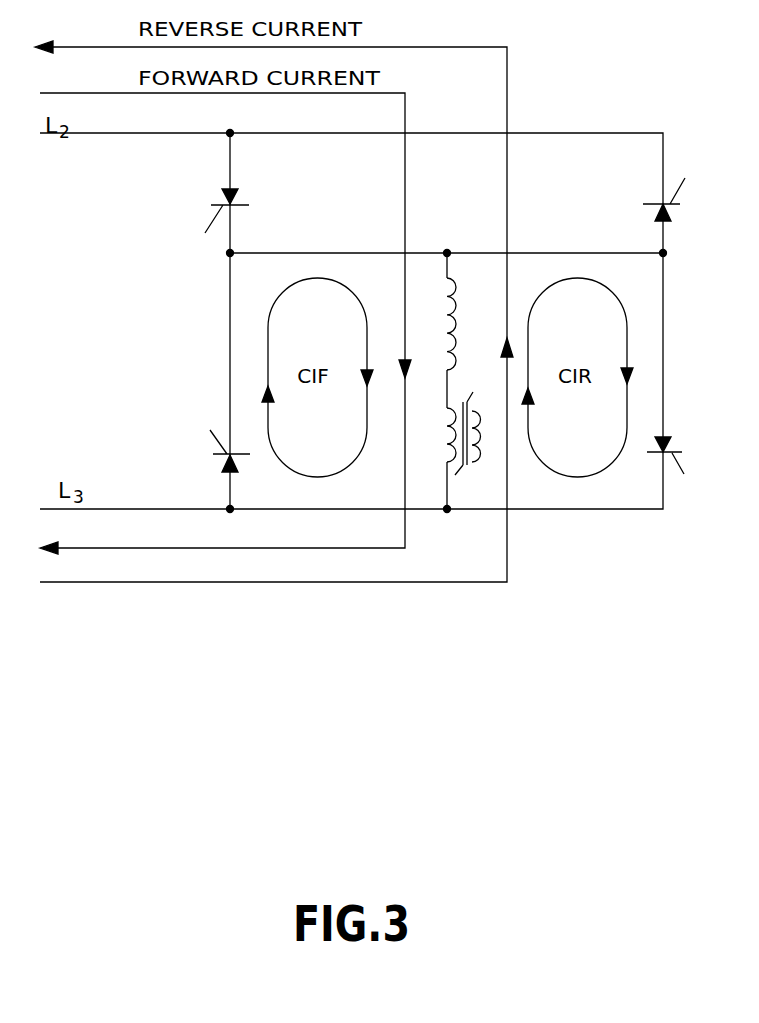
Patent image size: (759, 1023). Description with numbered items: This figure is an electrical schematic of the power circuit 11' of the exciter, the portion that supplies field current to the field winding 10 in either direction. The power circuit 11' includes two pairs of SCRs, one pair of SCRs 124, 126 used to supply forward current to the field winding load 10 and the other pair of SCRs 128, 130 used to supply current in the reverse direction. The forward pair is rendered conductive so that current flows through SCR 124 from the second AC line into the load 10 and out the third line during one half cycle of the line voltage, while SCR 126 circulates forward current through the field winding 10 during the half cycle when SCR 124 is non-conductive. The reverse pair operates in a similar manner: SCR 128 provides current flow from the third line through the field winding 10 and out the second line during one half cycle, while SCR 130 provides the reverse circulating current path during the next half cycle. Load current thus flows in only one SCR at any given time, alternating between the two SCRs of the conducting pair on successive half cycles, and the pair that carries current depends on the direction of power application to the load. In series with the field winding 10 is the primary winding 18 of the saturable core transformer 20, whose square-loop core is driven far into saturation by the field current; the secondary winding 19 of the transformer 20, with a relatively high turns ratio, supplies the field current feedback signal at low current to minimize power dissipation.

The power circuit 11' is at (595, 52).
The field winding 10 is at (463, 301).
The primary winding 18 is at (446, 430).
The secondary winding 19 is at (484, 411).
The saturable core transformer 20 is at (481, 470).
The SCR 124 is at (254, 202).
The SCR 126 is at (214, 472).
The SCR 128 is at (682, 212).
The SCR 130 is at (683, 437).